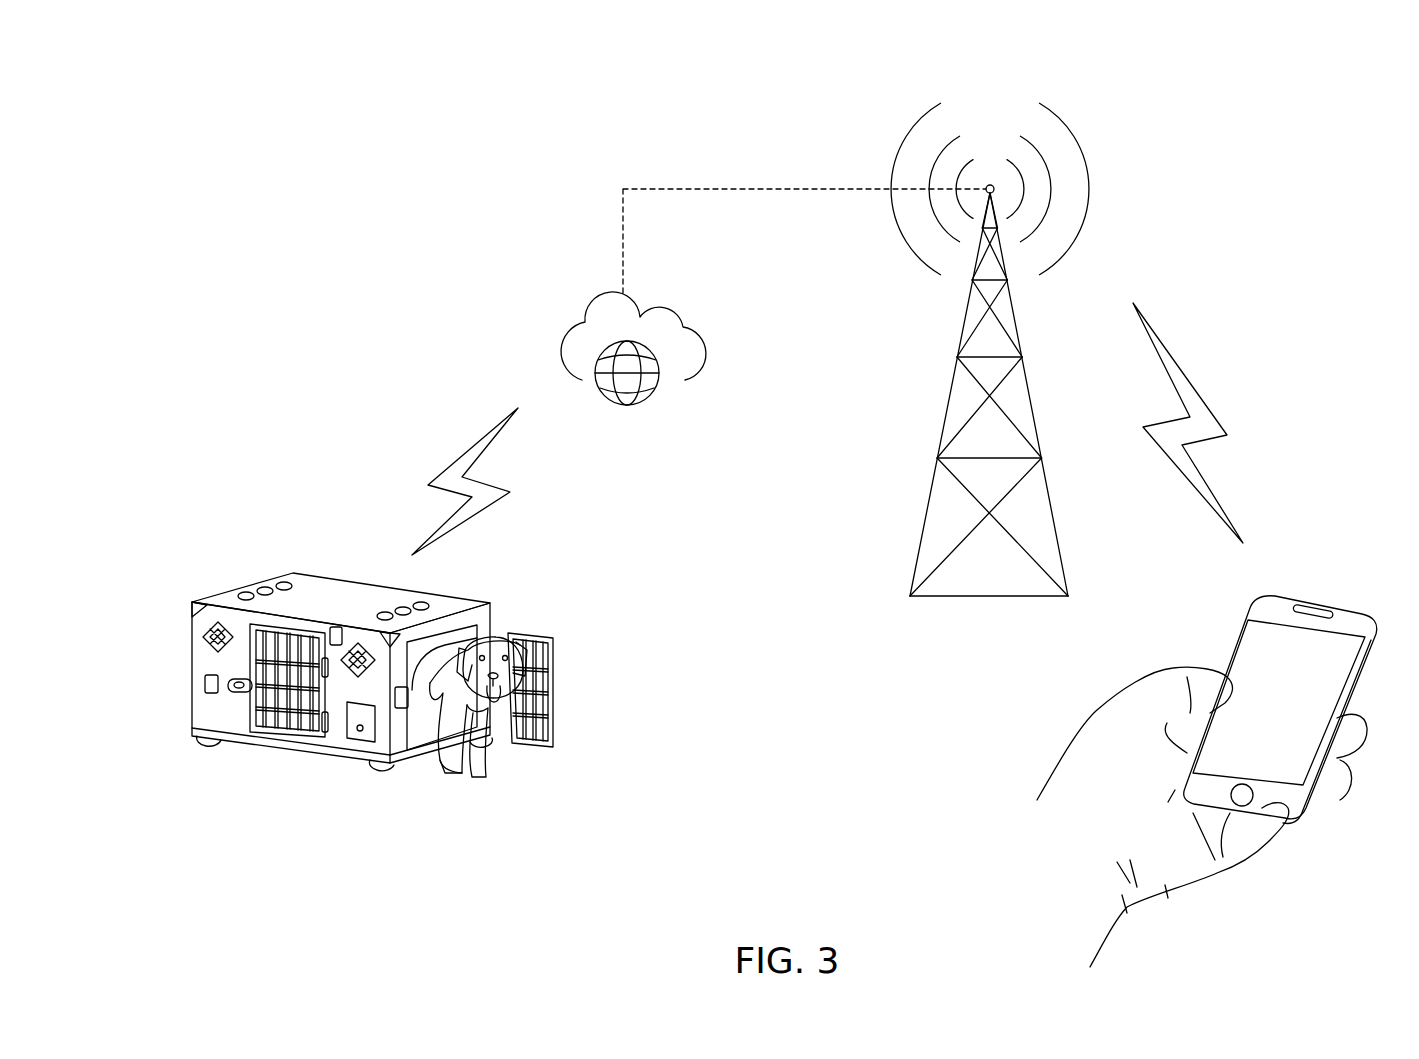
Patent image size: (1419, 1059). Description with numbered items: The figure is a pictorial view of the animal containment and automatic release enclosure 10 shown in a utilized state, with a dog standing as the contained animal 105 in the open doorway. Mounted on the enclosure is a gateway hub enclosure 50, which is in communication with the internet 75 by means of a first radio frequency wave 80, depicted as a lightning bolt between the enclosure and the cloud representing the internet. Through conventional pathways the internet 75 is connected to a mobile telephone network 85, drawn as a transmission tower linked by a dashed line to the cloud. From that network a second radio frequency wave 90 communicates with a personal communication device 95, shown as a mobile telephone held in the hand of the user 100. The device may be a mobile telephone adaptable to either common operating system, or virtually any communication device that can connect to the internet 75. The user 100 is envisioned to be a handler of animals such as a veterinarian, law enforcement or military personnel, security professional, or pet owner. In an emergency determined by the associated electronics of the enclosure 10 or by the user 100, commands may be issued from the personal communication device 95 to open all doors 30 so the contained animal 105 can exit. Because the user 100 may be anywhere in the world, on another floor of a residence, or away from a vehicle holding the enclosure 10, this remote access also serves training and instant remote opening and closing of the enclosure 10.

The animal containment and automatic release enclosure 10 is at (236, 222).
The doors 30 is at (543, 715).
The gateway hub enclosure 50 is at (367, 740).
The internet 75 is at (608, 328).
The first radio frequency (RF) wave 80 is at (452, 483).
The mobile telephone network 85 is at (994, 187).
The second radio frequency (RF) wave 90 is at (1187, 388).
The personal communication device 95 is at (1255, 656).
The user 100 is at (1160, 863).
The animal 105 is at (443, 675).